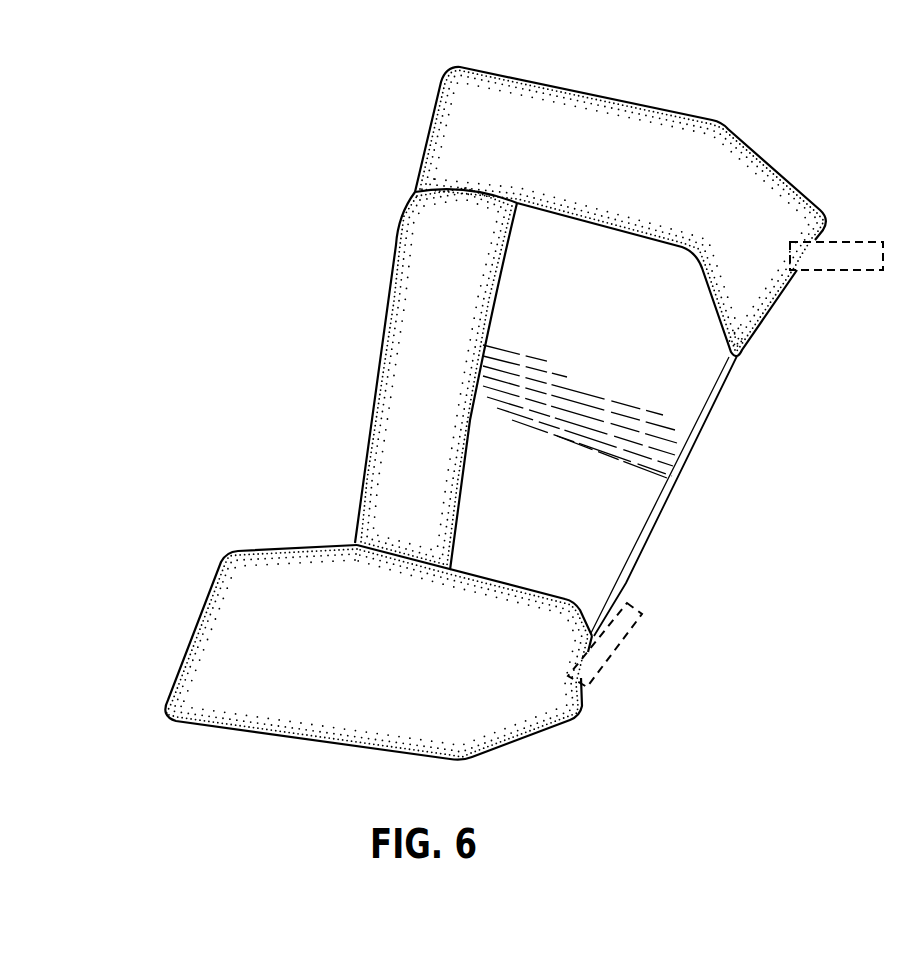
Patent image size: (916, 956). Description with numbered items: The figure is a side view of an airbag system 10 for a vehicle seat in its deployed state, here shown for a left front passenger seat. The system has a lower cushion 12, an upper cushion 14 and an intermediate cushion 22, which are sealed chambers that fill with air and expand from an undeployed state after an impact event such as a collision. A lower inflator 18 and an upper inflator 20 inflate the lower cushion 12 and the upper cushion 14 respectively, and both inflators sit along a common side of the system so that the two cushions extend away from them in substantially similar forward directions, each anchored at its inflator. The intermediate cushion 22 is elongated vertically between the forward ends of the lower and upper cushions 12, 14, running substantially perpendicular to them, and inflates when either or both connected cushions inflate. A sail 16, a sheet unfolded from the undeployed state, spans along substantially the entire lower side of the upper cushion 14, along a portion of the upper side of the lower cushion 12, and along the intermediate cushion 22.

The airbag system 10 is at (612, 721).
The lower cushion 12 is at (208, 707).
The upper cushion 14 is at (652, 130).
The sail 16 is at (637, 512).
The lower inflator 18 is at (635, 628).
The upper inflator 20 is at (873, 270).
The intermediate cushion 22 is at (410, 303).